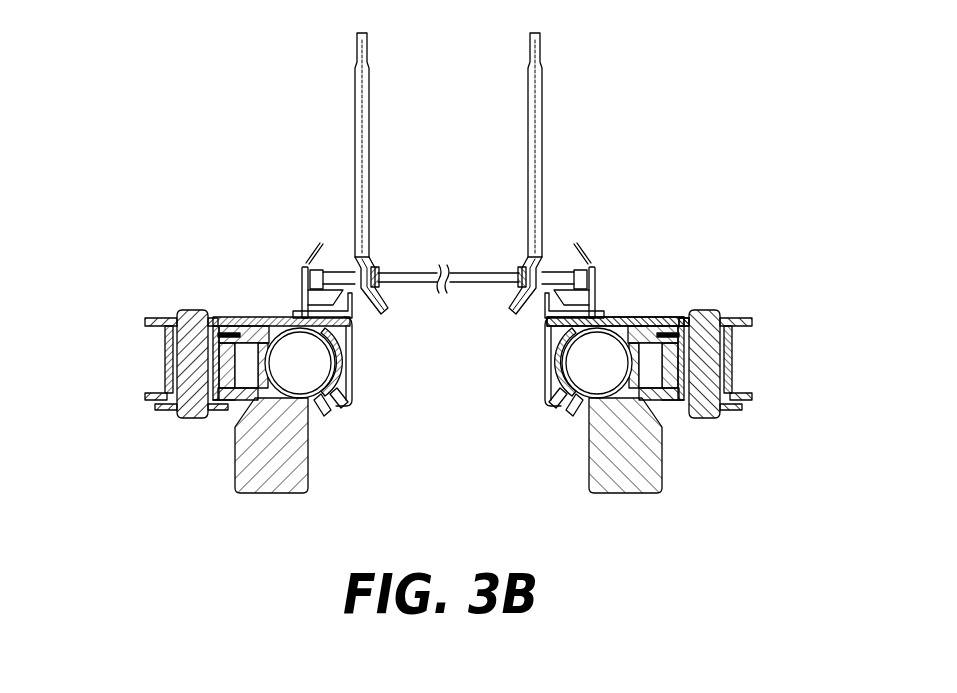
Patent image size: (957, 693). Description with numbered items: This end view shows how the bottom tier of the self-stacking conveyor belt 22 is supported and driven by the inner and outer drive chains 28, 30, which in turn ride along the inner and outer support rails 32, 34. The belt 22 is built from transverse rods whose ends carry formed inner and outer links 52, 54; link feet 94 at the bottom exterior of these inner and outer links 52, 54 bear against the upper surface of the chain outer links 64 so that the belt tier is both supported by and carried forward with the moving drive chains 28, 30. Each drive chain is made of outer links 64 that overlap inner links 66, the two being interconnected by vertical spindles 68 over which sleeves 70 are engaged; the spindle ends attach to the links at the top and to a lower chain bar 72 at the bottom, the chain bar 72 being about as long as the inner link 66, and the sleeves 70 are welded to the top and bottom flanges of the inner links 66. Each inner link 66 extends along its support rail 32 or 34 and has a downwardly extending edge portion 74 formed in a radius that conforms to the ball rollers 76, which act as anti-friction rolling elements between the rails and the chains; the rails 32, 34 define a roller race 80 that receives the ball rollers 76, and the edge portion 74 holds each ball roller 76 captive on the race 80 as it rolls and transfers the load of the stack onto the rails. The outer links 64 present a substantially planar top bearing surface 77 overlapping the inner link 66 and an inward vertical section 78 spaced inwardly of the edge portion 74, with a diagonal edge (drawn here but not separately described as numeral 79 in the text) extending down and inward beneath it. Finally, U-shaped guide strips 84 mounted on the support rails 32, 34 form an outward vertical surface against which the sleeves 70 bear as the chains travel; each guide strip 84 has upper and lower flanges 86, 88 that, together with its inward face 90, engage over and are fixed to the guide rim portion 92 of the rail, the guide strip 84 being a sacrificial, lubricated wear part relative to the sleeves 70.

The conveyor belt 22 is at (575, 69).
The inner drive chain 28 is at (168, 304).
The outer drive chain 30 is at (730, 304).
The inner support rail 32 is at (272, 493).
The outer support rail 34 is at (662, 478).
The inner link 52 is at (356, 142).
The outer link 54 is at (541, 142).
The outer link 64 is at (215, 345).
The inner link 66 is at (622, 325).
The vertical spindle 68 is at (178, 367).
The sleeve 70 is at (170, 320).
The lower chain bar 72 is at (148, 401).
The edge portion 74 is at (326, 410).
The ball roller 76 is at (295, 343).
The top bearing surface 77 is at (600, 316).
The inward vertical section 78 is at (353, 371).
The second tab 79 is at (348, 408).
The roller race 80 is at (288, 386).
The U-shaped guide strip 84 is at (198, 345).
The upper flange 86 is at (243, 336).
The lower flange 88 is at (222, 410).
The inward face 90 is at (254, 350).
The guide rim portion 92 is at (230, 358).
The link foot 94 is at (590, 305).